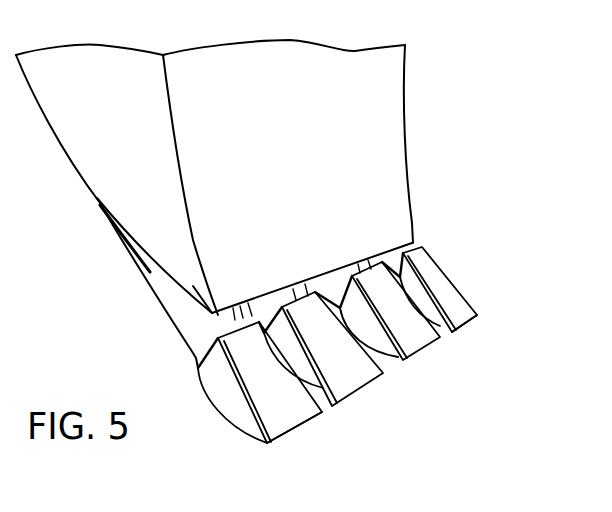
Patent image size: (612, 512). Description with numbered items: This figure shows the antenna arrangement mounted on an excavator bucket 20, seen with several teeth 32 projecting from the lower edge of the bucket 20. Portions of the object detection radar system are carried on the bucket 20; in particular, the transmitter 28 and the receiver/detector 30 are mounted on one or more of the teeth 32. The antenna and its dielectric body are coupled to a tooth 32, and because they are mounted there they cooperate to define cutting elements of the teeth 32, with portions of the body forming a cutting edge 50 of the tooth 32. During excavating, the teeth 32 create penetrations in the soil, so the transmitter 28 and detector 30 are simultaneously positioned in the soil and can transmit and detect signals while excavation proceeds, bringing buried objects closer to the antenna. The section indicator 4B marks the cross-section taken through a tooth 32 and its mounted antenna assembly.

The bucket 20 is at (473, 117).
The section line 4B is at (193, 286).
The teeth 32 is at (462, 273).
The transmitter 28 is at (290, 440).
The receiver/detector 30 is at (468, 334).
The cutting edge 50 is at (473, 320).